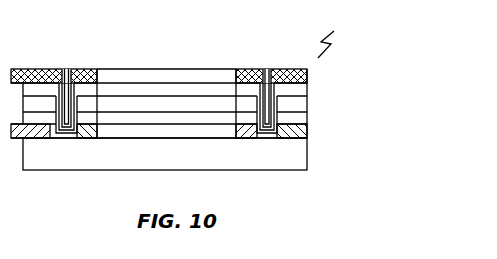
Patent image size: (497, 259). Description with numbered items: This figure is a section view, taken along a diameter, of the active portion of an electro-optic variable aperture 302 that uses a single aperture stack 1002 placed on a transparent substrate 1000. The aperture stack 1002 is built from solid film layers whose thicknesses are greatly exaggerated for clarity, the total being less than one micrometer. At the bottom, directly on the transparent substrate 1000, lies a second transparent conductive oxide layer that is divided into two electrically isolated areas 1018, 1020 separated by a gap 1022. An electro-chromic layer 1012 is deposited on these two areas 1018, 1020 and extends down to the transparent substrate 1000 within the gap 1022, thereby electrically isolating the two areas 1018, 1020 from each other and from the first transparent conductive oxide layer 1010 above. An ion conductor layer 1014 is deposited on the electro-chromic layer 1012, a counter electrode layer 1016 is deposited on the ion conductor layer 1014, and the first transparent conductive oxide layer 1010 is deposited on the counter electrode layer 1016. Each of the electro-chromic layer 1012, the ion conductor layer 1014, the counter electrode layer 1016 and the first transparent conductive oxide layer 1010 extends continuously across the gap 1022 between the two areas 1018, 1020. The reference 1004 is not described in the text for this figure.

The electro-optic variable aperture 302 is at (334, 36).
The transparent substrate 1000 is at (307, 156).
The aperture stack 1002 is at (312, 138).
The conductive pad 1004 is at (52, 138).
The first transparent conductive oxide layer 1010 is at (236, 78).
The electro-chromic layer 1012 is at (236, 117).
The ion conductor layer 1014 is at (236, 103).
The counter electrode layer 1016 is at (236, 90).
The electrically isolated area of second transparent conductive oxide layer 1018 is at (238, 137).
The electrically isolated area of second transparent conductive oxide layer 1020 is at (291, 132).
The gap 1022 is at (268, 139).